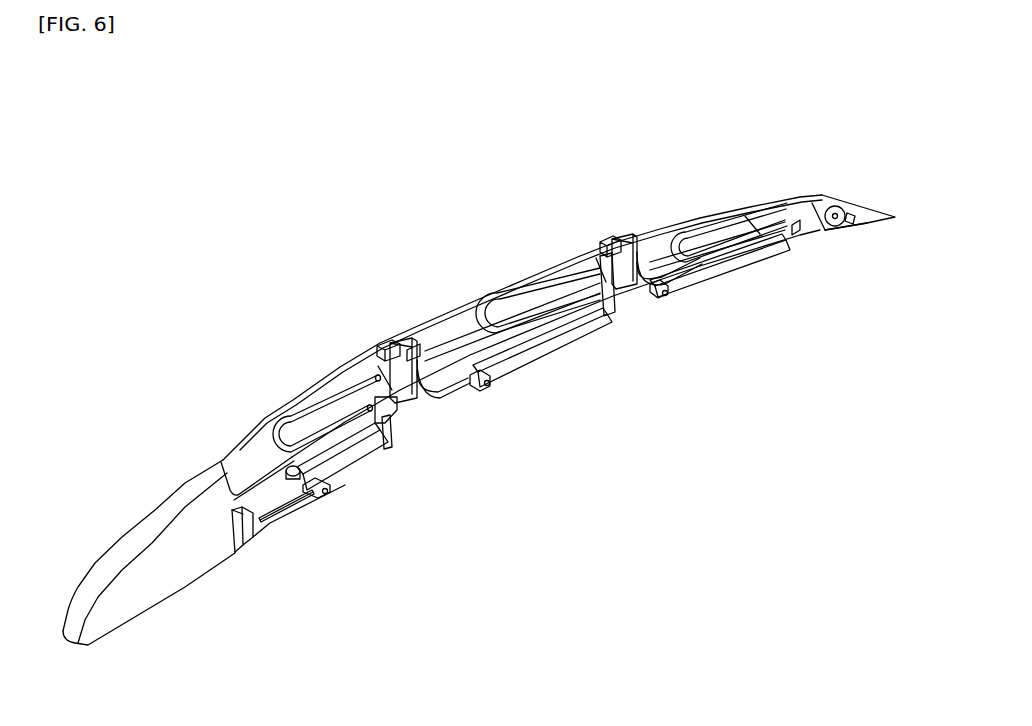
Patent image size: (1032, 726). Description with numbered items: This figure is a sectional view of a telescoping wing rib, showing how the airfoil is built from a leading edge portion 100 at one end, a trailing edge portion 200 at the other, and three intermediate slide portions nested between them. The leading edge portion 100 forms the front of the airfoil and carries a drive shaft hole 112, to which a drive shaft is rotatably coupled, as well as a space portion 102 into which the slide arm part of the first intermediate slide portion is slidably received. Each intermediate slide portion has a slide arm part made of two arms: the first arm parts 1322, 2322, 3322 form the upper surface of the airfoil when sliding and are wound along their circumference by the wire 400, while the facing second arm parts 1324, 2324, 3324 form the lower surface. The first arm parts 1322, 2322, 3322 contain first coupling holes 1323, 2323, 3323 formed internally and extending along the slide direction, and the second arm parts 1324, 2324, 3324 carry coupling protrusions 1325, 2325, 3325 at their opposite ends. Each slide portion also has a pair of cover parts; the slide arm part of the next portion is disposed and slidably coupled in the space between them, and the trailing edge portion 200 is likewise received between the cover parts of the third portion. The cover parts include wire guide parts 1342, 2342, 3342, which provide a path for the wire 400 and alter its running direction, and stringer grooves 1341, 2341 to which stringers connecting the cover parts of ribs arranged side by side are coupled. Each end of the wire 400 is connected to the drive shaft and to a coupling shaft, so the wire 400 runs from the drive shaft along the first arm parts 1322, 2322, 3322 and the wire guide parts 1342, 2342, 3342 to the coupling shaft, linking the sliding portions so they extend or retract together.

The leading edge portion 100 is at (147, 582).
The space portion 102 is at (249, 454).
The drive shaft hole 112 is at (300, 483).
The trailing edge portion 200 is at (870, 208).
The wire 400 is at (283, 413).
The first arm part 1322 is at (338, 388).
The first coupling hole 1323 is at (383, 388).
The second arm part 1324 is at (358, 457).
The coupling protrusion 1325 is at (318, 484).
The stringer groove 1341 is at (410, 367).
The wire guide part 1342 is at (409, 363).
The first arm part 2322 is at (572, 278).
The first coupling hole 2323 is at (598, 273).
The second arm part 2324 is at (580, 330).
The coupling protrusion 2325 is at (487, 382).
The stringer groove 2341 is at (633, 240).
The wire guide part 2342 is at (641, 263).
The first arm part 3322 is at (769, 220).
The first coupling hole 3323 is at (757, 230).
The second arm part 3324 is at (733, 263).
The coupling protrusion 3325 is at (667, 293).
The wire guide part 3342 is at (816, 206).